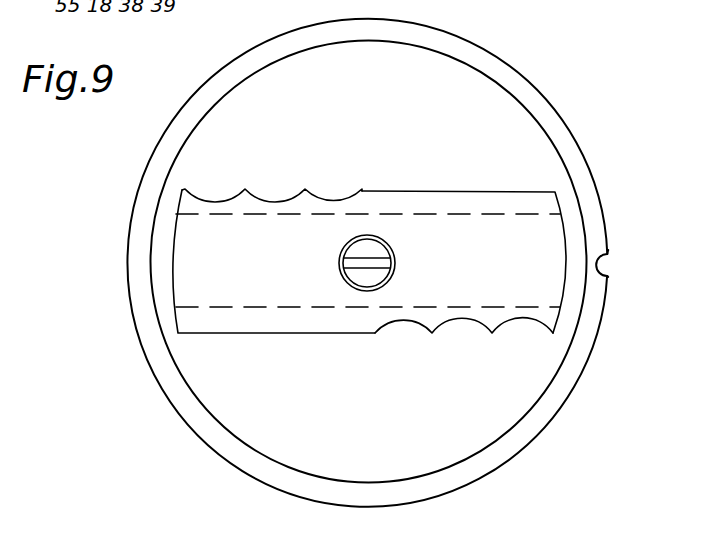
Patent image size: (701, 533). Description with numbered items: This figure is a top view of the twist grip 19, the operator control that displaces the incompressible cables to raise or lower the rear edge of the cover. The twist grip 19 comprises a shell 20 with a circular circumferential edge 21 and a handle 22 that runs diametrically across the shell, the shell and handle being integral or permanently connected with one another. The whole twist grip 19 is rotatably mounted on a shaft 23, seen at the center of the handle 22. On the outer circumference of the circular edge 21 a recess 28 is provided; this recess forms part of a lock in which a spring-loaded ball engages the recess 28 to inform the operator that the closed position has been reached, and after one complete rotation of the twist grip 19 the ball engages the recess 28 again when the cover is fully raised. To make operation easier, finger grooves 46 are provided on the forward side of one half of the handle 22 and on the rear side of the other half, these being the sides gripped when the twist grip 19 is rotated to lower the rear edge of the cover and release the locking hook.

The twist grip 19 is at (555, 96).
The shell 20 is at (487, 108).
The circular circumferential edge 21 is at (572, 150).
The handle 22 is at (428, 240).
The shaft 23 is at (367, 248).
The recess 28 is at (632, 261).
The finger grooves 46 is at (263, 198).